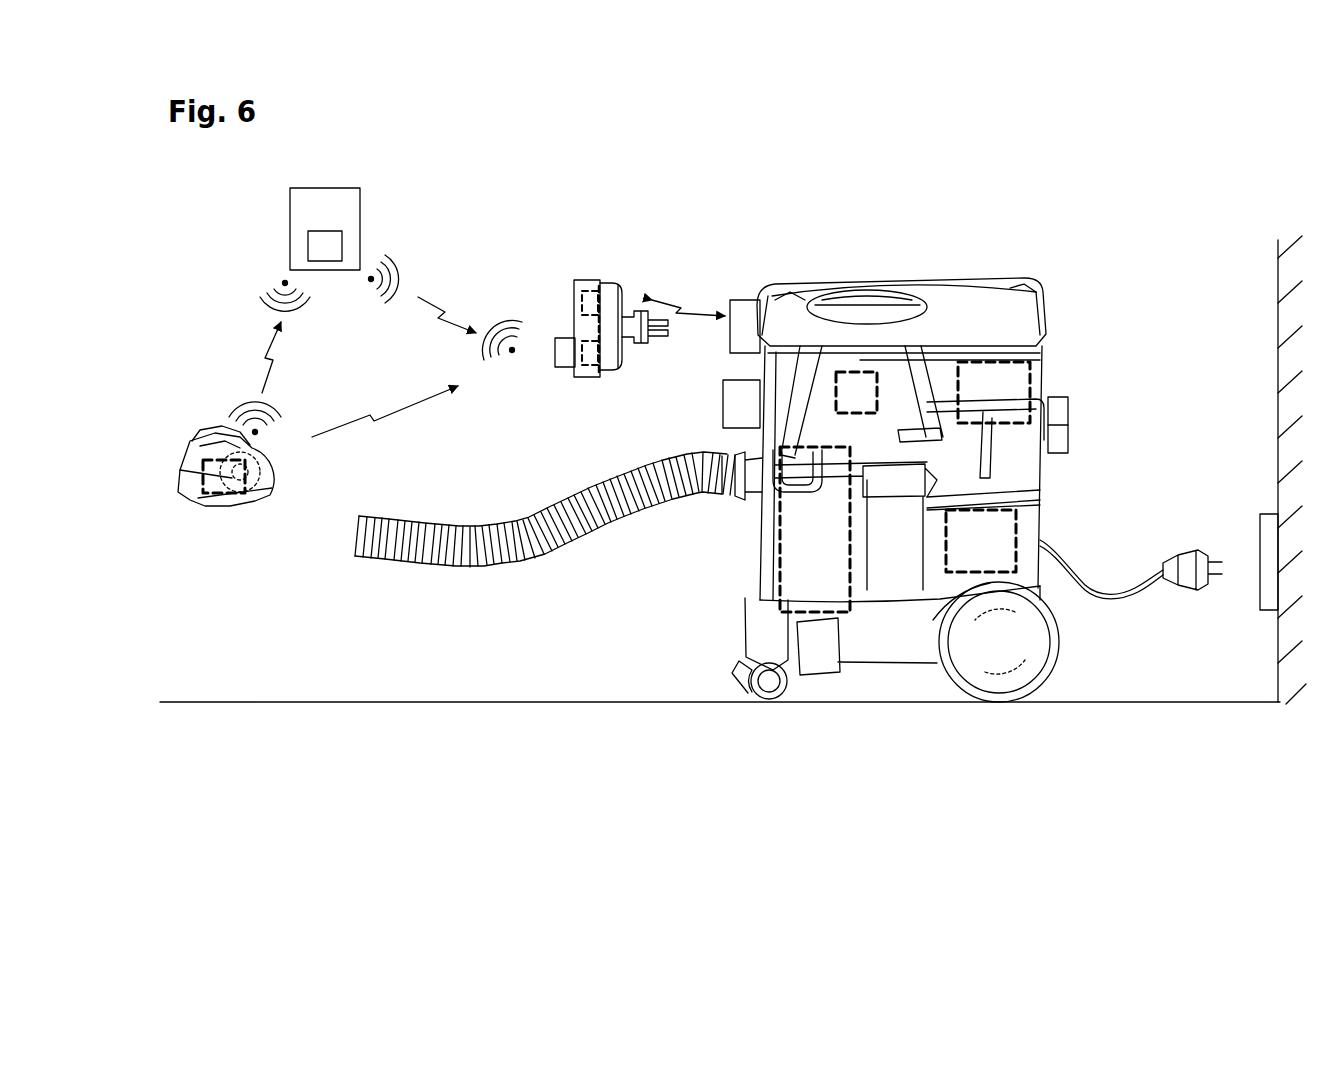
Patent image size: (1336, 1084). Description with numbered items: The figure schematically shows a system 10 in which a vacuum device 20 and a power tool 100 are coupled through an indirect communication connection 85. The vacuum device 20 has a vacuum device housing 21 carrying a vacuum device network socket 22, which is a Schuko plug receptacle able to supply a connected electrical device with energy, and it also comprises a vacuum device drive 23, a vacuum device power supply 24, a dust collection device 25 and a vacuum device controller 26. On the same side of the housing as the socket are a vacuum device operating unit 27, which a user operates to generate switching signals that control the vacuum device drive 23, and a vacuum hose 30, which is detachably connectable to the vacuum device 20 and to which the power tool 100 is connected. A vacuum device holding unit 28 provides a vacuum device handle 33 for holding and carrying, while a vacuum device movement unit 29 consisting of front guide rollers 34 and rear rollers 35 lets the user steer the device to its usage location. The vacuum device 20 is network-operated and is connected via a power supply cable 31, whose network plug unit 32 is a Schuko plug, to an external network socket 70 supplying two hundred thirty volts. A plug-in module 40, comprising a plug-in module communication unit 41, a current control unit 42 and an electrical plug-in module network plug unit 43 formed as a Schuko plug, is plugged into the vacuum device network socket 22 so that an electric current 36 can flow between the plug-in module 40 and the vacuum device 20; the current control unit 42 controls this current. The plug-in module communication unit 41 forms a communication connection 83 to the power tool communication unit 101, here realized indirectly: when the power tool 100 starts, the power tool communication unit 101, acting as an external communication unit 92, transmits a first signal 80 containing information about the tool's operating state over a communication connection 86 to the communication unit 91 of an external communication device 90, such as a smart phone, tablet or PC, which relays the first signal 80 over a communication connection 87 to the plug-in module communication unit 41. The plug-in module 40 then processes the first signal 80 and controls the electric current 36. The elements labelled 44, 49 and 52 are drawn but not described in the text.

The system 10 is at (1160, 242).
The vacuum device 20 is at (933, 513).
The vacuum device housing 21 is at (962, 286).
The vacuum device network socket 22 is at (745, 299).
The vacuum device drive 23 is at (1032, 385).
The vacuum device power supply 24 is at (1018, 541).
The dust collection device 25 is at (778, 536).
The vacuum device controller 26 is at (852, 370).
The vacuum device operating unit 27 is at (723, 405).
The vacuum device holding unit 28 is at (895, 304).
The vacuum device movement unit 29 is at (885, 696).
The vacuum hose 30 is at (428, 556).
The power supply cable 31 is at (1120, 592).
The network plug unit 32 is at (1194, 584).
The vacuum device handle 33 is at (844, 298).
The front guide rollers 34 is at (797, 690).
The rear rollers 35 is at (1032, 660).
The electric current 36 is at (686, 304).
The plug-in module 40 is at (581, 330).
The plug-in module communication unit 41 is at (580, 300).
The current control unit 42 is at (592, 372).
The electrical plug-in module network plug unit 43 is at (633, 317).
The module energy store 44 is at (566, 370).
The module housing 49 is at (609, 295).
The interface 52 is at (582, 326).
The external network socket 70 is at (1259, 526).
The first signal 80 is at (268, 302).
The communication connection 83 is at (430, 412).
The indirect communication connection 85 is at (390, 418).
The communication connection 86 is at (264, 363).
The communication connection 87 is at (446, 316).
The external communication device 90 is at (289, 229).
The communication unit of the external communication device 91 is at (308, 248).
The external communication unit 92 is at (335, 230).
The power tool 100 is at (282, 508).
The power tool communication unit 101 is at (215, 494).